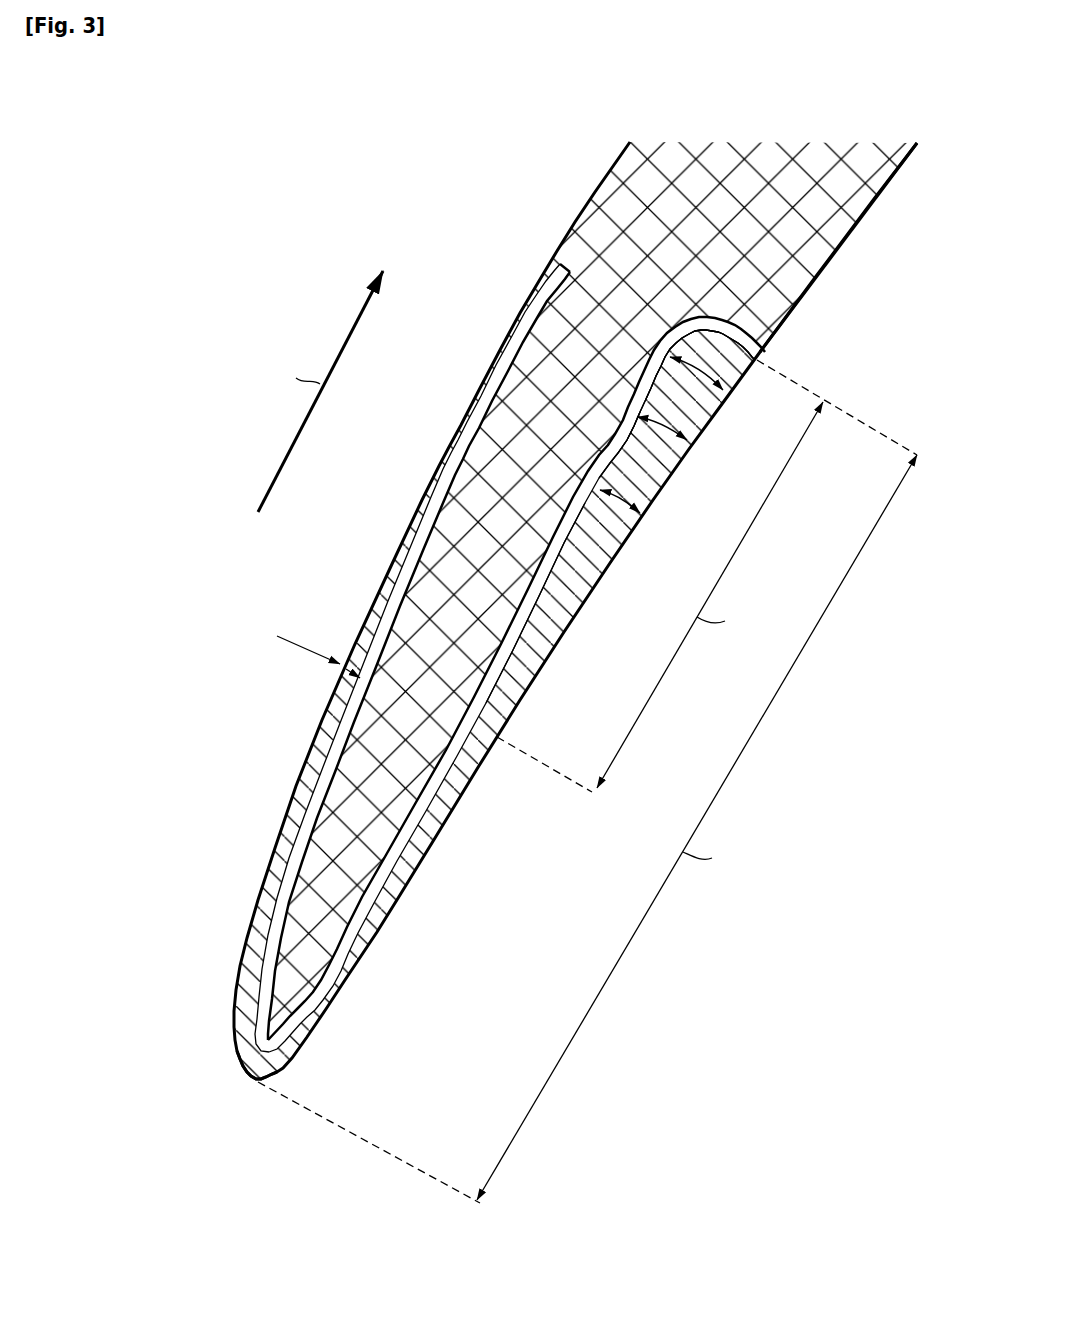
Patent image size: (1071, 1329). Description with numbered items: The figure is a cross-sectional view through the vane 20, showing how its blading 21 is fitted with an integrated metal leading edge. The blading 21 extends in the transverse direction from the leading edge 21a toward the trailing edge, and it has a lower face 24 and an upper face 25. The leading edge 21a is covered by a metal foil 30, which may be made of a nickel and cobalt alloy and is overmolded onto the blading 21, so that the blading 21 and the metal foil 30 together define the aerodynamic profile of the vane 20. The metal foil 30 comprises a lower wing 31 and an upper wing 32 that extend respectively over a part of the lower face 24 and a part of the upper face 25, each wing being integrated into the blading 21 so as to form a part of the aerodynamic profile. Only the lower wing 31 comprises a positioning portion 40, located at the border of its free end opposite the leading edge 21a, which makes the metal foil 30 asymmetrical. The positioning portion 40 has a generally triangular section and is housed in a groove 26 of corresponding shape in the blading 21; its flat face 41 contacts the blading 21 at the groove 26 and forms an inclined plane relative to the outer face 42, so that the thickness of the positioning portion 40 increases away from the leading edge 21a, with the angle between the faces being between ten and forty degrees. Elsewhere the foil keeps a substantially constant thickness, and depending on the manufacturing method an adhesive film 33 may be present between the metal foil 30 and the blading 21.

The vane 20 is at (418, 197).
The blading 21 is at (509, 657).
The leading edge 21a is at (250, 1081).
The lower face 24 is at (788, 320).
The upper face 25 is at (575, 225).
The groove 26 is at (657, 376).
The metal foil 30 is at (433, 648).
The lower wing 31 is at (423, 867).
The upper wing 32 is at (266, 855).
The adhesive film 33 is at (420, 543).
The positioning portion 40 is at (643, 457).
The flat face 41 is at (603, 437).
The outer face 42 is at (617, 557).